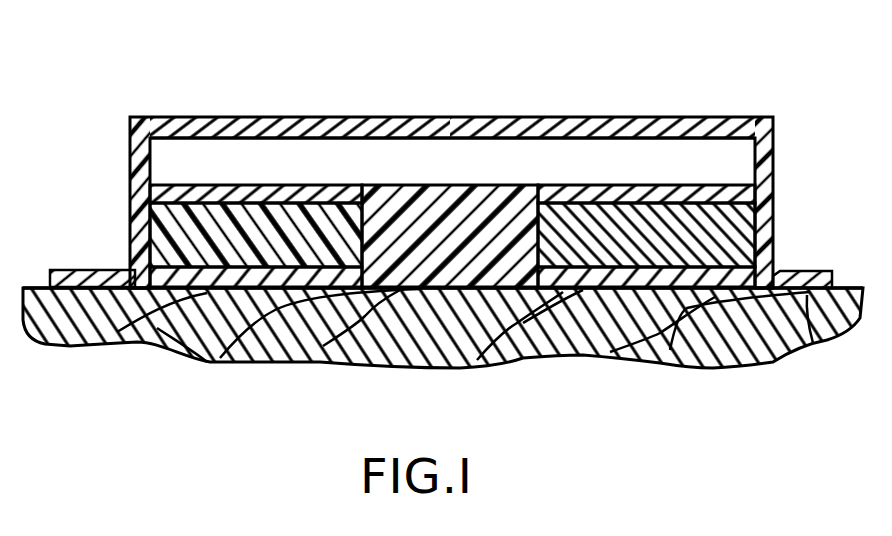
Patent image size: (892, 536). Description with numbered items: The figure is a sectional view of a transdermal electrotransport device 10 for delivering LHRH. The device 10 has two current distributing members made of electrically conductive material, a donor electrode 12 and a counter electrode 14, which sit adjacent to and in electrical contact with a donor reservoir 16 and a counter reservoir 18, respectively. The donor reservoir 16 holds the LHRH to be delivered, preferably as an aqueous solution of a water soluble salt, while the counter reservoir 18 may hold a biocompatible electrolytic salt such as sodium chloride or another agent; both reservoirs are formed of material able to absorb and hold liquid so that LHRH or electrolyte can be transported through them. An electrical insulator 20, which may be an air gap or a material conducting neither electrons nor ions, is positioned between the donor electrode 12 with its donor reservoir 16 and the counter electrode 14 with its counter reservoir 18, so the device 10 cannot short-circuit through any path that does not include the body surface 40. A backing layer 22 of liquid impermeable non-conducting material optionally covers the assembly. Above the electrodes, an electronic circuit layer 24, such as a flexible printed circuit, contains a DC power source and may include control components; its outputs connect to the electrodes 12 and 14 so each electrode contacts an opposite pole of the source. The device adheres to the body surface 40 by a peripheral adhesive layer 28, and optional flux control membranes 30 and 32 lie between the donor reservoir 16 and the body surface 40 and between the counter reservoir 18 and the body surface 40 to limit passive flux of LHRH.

The electrotransport device 10 is at (82, 86).
The donor electrode 12 is at (271, 188).
The counter electrode 14 is at (703, 190).
The donor reservoir 16 is at (172, 225).
The counter reservoir 18 is at (720, 238).
The electrical insulator 20 is at (470, 197).
The backing layer 22 is at (768, 166).
The electronic circuit layer 24 is at (320, 160).
The peripheral adhesive layer 28 is at (67, 347).
The flux control membrane 30 is at (213, 363).
The flux control membrane 32 is at (649, 272).
The body surface 40 is at (543, 349).